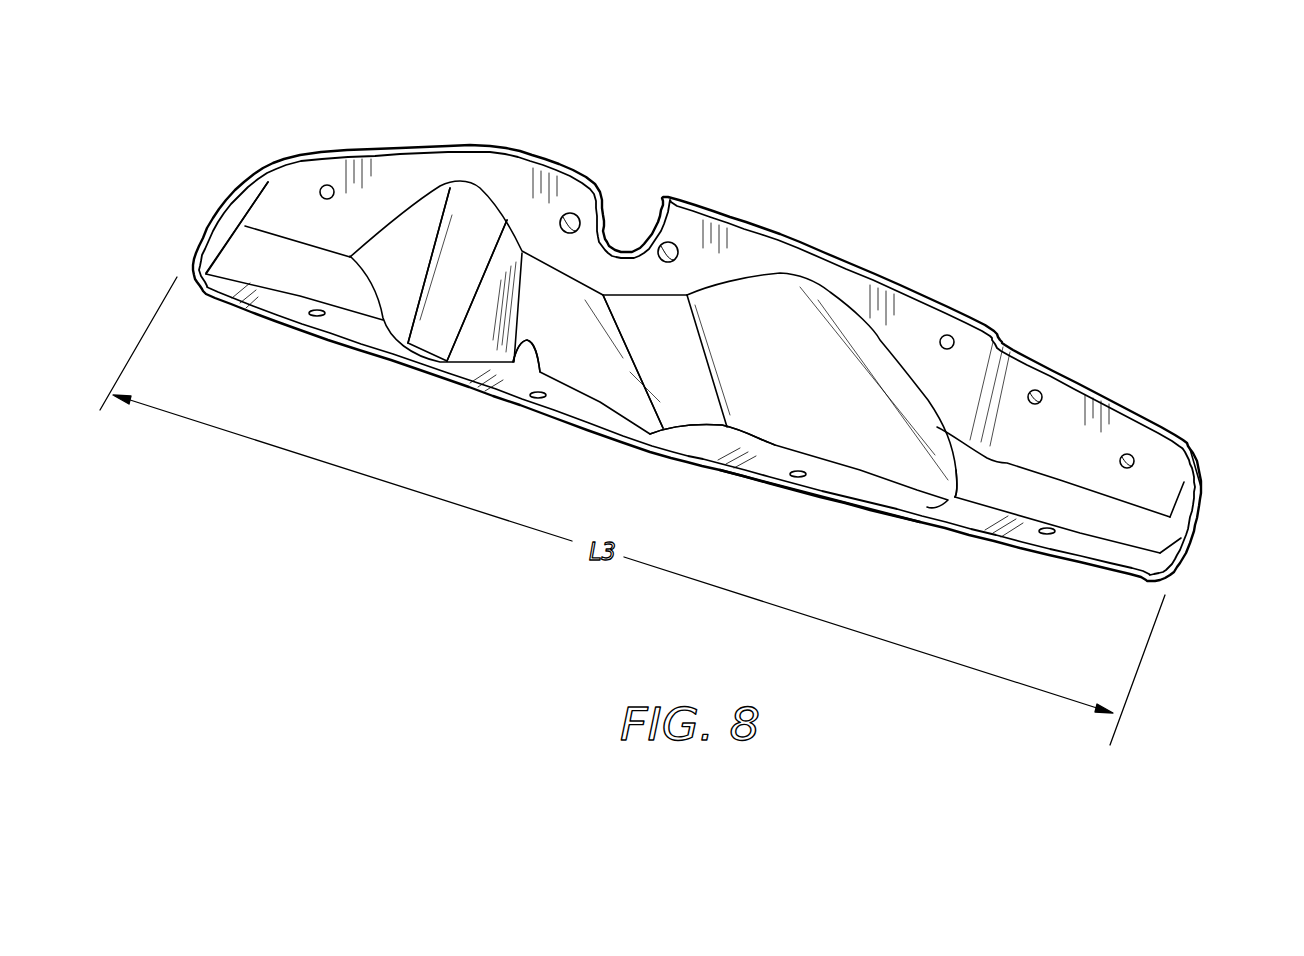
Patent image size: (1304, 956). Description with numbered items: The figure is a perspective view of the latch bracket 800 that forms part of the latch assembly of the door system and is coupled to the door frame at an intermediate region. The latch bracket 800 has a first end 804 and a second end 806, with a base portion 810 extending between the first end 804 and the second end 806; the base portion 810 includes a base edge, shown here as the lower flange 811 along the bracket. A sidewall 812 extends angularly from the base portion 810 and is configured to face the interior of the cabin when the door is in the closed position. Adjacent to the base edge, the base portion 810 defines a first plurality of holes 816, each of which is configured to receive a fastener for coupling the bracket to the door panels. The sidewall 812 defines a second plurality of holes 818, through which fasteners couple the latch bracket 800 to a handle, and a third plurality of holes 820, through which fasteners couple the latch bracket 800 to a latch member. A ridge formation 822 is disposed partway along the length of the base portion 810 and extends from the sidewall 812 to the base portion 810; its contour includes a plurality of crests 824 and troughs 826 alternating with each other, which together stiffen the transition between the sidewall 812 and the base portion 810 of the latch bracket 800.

The latch bracket 800 is at (205, 95).
The first end 804 is at (212, 220).
The second end 806 is at (1200, 498).
The base portion 810 is at (707, 449).
The lower flange 811 is at (840, 500).
The sidewall 812 is at (1005, 483).
The first plurality of holes 816 is at (315, 318).
The second plurality of holes 818 is at (1129, 454).
The third plurality of holes 820 is at (663, 242).
The ridge formation 822 is at (602, 403).
The crests 824 is at (440, 322).
The troughs 826 is at (530, 366).